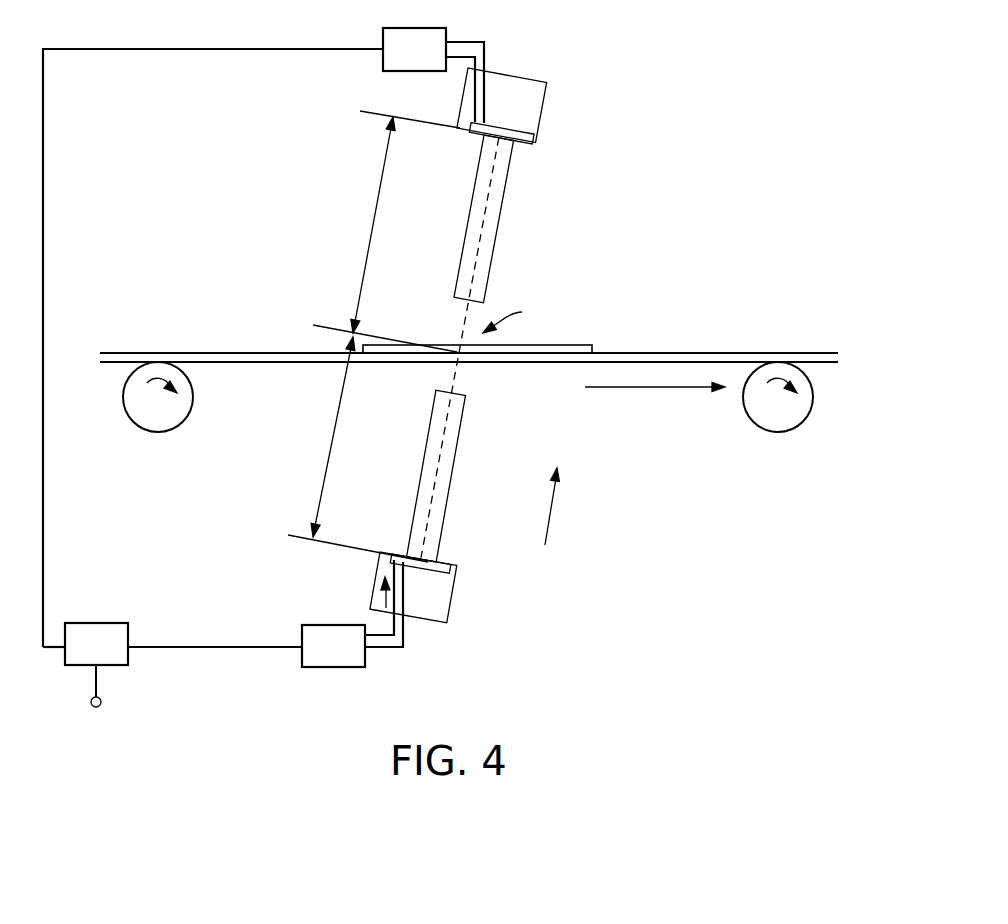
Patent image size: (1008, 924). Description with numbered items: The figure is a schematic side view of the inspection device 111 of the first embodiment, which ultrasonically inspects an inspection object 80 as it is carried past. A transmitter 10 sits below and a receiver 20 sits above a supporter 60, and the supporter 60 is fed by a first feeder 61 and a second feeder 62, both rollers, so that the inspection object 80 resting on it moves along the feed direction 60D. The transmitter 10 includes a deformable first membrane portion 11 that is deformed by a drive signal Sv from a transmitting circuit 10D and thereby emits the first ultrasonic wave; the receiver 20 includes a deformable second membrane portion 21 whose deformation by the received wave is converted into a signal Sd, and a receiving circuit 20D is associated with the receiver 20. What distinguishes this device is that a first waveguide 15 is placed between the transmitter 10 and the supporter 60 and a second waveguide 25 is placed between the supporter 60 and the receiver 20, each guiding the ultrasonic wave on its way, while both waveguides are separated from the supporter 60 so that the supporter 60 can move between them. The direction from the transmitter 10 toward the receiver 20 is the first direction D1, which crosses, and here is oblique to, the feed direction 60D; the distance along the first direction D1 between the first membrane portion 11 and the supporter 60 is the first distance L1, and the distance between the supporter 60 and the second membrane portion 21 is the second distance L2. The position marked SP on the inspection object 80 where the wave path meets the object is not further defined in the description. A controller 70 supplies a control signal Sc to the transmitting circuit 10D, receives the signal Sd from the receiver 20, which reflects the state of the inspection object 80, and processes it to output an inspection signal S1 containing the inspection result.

The inspection device 111 is at (833, 116).
The transmitter 10 is at (452, 598).
The transmitting circuit 10D is at (366, 660).
The first membrane portion 11 is at (457, 565).
The first waveguide 15 is at (450, 490).
The receiver 20 is at (547, 103).
The receiving circuit 20D is at (446, 30).
The second membrane portion 21 is at (536, 137).
The second waveguide 25 is at (497, 226).
The supporter 60 is at (677, 353).
The feed direction 60D is at (620, 389).
The first feeder 61 is at (125, 408).
The second feeder 62 is at (810, 412).
The controller 70 is at (85, 623).
The inspection object 80 is at (567, 345).
The first distance L1 is at (358, 449).
The second distance L2 is at (386, 231).
The print position SP is at (511, 303).
The first direction D1 is at (543, 531).
The drive signal Sv is at (381, 597).
The control signal Sc is at (255, 664).
The signal Sd is at (253, 62).
The inspection signal S1 is at (102, 704).